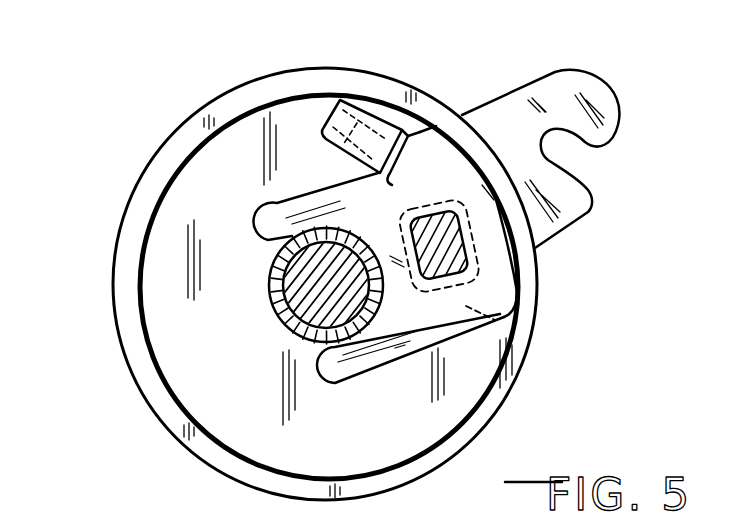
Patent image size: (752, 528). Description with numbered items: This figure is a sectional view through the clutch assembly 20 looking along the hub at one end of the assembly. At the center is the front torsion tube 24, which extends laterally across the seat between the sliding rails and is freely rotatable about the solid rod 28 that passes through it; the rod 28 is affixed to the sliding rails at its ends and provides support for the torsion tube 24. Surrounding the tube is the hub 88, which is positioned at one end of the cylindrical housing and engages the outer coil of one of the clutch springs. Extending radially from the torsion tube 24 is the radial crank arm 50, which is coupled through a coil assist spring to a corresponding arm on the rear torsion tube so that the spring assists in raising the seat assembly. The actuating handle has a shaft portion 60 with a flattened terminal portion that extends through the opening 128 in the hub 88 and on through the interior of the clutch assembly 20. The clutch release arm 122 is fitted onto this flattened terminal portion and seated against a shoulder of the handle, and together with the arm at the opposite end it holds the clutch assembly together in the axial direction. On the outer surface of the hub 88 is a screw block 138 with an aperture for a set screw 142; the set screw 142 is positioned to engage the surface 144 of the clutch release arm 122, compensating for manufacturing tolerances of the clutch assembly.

The clutch assembly 20 is at (240, 60).
The front torsion tube 24 is at (290, 335).
The solid rod 28 is at (275, 300).
The radial crank arm 50 is at (578, 72).
The shaft portion 60 is at (475, 284).
The hub 88 is at (170, 278).
The clutch release arm 122 is at (381, 370).
The opening 128 is at (520, 321).
The screw block 138 is at (323, 139).
The set screw 142 is at (385, 188).
The surface 144 is at (404, 130).